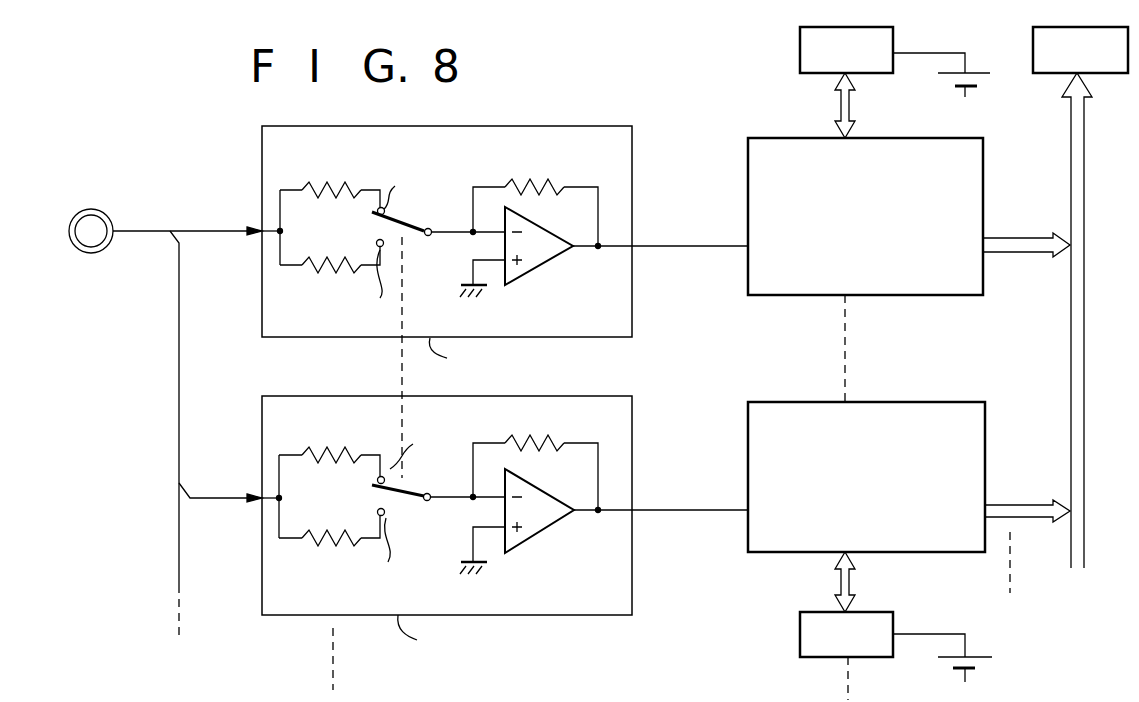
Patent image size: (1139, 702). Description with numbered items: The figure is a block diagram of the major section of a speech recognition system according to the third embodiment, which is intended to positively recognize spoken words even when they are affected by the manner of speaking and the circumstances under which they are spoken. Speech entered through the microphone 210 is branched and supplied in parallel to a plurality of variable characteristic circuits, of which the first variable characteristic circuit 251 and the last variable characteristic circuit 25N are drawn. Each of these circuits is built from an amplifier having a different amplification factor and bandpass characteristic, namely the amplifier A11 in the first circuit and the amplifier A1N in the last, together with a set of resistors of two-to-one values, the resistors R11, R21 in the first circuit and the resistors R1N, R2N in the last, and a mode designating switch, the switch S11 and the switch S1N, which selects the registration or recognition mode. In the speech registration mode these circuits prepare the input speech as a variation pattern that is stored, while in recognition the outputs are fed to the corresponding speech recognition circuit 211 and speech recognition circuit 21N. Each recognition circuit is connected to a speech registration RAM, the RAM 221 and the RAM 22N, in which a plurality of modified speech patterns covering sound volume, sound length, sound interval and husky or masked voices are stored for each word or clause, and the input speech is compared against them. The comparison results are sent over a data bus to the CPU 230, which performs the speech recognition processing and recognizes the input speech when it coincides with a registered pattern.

The microphone 210 is at (93, 253).
The variable characteristic circuit 251 is at (505, 237).
The variable characteristic circuit 25N is at (489, 545).
The speech recognition circuit 211 is at (937, 138).
The speech recognition circuit 21N is at (920, 402).
The speech registration RAM 221 is at (800, 43).
The speech registration RAM 22N is at (812, 612).
The CPU 230 is at (1033, 43).
The resistor R11 is at (303, 188).
The resistor R21 is at (318, 270).
The mode designating switch S11 is at (421, 239).
The amplifier A11 is at (559, 257).
The resistor R1N is at (333, 433).
The resistor R2N is at (328, 546).
The mode designating switch S1N is at (420, 512).
The amplifier A1N is at (558, 522).